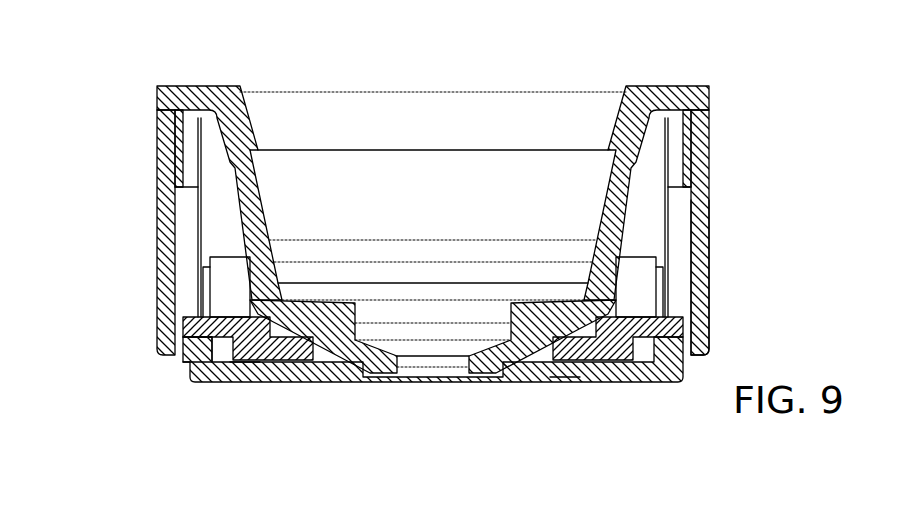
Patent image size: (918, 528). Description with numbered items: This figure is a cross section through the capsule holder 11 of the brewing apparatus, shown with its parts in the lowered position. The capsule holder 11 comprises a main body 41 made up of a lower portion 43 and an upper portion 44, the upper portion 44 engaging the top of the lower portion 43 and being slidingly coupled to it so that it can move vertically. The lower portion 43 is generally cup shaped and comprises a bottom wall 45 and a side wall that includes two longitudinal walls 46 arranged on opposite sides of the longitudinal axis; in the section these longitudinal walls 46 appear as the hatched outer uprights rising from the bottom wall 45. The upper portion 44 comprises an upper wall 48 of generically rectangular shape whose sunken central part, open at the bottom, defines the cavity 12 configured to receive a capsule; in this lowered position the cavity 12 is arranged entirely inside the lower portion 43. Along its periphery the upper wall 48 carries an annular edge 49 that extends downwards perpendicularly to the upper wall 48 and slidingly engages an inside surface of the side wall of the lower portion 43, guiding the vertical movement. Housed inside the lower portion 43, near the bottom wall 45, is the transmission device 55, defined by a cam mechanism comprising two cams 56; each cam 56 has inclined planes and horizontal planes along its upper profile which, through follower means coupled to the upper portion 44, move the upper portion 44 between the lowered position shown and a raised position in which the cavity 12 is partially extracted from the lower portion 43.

The capsule holder 11 is at (107, 113).
The cavity 12 is at (276, 190).
The main body 41 is at (727, 197).
The lower portion 43 is at (712, 277).
The upper portion 44 is at (712, 97).
The bottom wall 45 is at (297, 378).
The longitudinal walls 46 is at (175, 263).
The upper wall 48 is at (200, 98).
The annular edge 49 is at (693, 147).
The transmission device 55 is at (190, 370).
The cams 56 is at (243, 363).